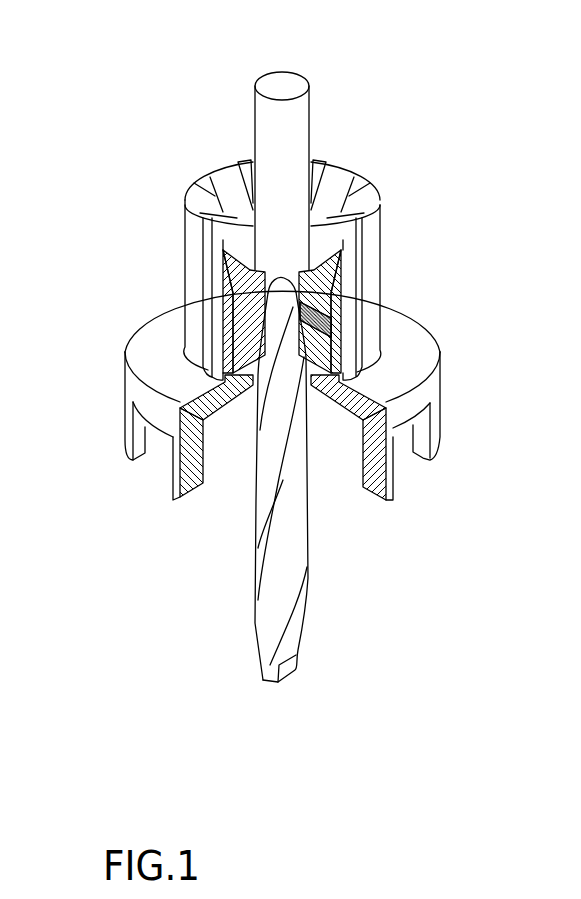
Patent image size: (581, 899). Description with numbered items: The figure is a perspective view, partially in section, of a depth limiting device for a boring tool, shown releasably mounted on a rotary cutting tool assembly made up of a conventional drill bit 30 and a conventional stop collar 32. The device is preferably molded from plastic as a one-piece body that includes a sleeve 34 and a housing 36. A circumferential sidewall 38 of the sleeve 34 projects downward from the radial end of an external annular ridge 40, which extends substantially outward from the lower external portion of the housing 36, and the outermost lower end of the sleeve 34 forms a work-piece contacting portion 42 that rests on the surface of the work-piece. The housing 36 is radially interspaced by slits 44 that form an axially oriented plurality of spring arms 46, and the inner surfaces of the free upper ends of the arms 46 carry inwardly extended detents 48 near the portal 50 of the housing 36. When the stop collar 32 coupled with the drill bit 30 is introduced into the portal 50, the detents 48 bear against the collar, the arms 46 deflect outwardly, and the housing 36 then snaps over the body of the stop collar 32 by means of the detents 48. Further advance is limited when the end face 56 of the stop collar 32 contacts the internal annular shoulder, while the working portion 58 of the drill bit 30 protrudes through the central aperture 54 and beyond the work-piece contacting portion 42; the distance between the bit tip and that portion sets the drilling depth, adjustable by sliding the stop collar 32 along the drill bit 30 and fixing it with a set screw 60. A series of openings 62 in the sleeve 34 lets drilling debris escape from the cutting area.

The drill bit 30 is at (309, 107).
The stop collar 32 is at (380, 217).
The sleeve 34 is at (125, 398).
The housing 36 is at (192, 320).
The circumferential sidewall 38 is at (190, 460).
The external annular ridge 40 is at (153, 300).
The work-piece contacting portion 42 is at (422, 458).
The slits 44 is at (207, 338).
The spring arms 46 is at (372, 280).
The detents 48 is at (222, 213).
The portal 50 is at (222, 170).
The central aperture 54 is at (248, 393).
The end face 56 is at (282, 311).
The working portion 58 is at (308, 578).
The set screw 60 is at (312, 321).
The openings 62 is at (152, 472).